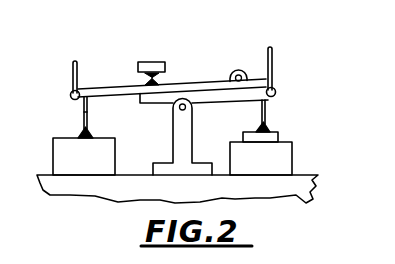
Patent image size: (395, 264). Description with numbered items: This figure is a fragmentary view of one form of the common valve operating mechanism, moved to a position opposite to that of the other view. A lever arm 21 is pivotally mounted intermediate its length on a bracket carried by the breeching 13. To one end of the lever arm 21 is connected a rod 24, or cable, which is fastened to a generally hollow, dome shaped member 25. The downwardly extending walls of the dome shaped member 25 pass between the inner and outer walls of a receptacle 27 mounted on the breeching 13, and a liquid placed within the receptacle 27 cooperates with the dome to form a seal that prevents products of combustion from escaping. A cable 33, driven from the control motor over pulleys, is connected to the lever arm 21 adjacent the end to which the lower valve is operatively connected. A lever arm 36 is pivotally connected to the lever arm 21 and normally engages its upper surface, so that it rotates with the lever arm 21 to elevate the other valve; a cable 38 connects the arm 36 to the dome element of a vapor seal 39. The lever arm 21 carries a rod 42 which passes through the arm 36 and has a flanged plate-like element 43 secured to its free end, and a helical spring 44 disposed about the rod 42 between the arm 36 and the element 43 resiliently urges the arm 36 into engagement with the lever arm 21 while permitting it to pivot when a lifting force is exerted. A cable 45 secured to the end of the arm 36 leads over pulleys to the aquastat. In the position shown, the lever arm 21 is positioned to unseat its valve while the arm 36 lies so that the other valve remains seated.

The breeching 13 is at (309, 192).
The lever arm 21 is at (205, 98).
The rod 24 is at (266, 107).
The dome shaped member 25 is at (268, 135).
The receptacle 27 is at (283, 157).
The cable 33 is at (272, 65).
The lever arm 36 is at (102, 97).
The cable 38 is at (83, 118).
The vapor seal 39 is at (51, 145).
The rod 42 is at (146, 81).
The flanged plate-like element 43 is at (150, 62).
The helical spring 44 is at (165, 76).
The cable 45 is at (73, 78).